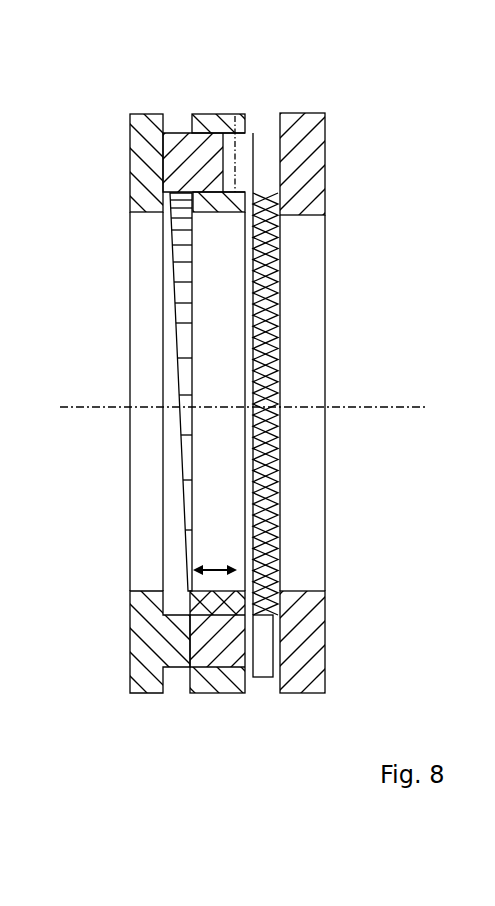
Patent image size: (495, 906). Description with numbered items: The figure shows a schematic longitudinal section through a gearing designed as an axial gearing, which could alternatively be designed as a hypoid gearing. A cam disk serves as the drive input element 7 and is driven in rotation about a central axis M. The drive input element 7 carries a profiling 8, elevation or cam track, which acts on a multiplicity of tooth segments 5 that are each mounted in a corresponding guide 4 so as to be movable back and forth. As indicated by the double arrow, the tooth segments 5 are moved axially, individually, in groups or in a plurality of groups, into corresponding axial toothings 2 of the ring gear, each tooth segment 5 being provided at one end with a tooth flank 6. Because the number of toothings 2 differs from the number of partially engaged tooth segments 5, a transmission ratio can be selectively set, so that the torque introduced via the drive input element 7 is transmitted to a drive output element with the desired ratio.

The toothing 2 is at (268, 332).
The guide 4 is at (238, 142).
The tooth segment 5 is at (178, 143).
The tooth flank 6 is at (406, 83).
The drive input element 7 is at (148, 138).
The profiling 8 is at (172, 552).
The central axis M is at (383, 407).